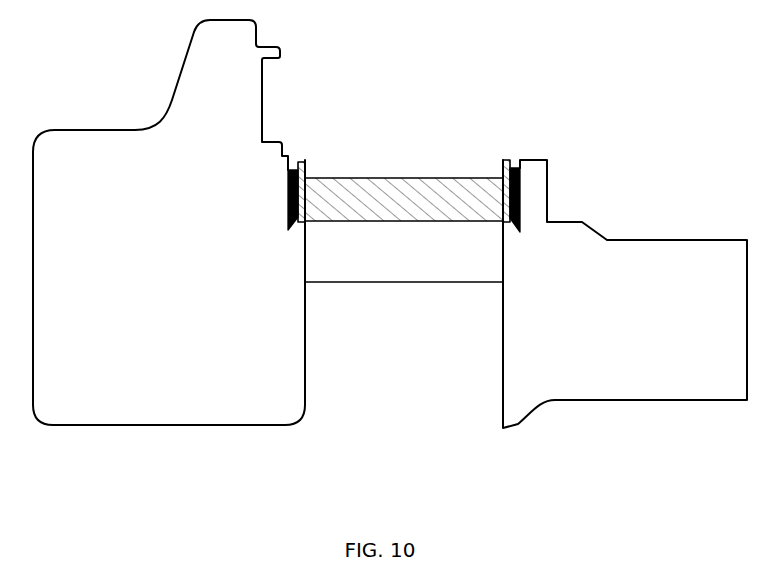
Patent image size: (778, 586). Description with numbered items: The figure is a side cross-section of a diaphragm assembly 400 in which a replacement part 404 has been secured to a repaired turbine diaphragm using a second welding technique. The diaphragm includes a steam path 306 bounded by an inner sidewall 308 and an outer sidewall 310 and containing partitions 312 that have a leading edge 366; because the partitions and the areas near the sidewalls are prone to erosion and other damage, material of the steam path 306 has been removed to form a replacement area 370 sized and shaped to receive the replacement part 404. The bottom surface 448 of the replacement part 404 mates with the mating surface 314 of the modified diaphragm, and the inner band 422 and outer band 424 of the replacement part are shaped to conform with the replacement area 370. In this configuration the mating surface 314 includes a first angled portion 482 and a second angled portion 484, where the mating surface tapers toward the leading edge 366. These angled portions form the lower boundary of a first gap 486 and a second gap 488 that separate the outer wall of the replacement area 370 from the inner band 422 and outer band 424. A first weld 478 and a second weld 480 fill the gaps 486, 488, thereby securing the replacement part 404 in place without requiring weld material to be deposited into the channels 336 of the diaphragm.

The diaphragm assembly 400 is at (622, 72).
The replacement part 404 is at (453, 127).
The steam path 306 is at (305, 455).
The inner sidewall 308 is at (548, 166).
The outer sidewall 310 is at (282, 172).
The partitions 312 is at (347, 272).
The mating surface 314 is at (403, 225).
The channels 336 is at (340, 401).
The leading edge 366 is at (475, 284).
The replacement area 370 is at (328, 251).
The inner band 422 is at (505, 160).
The outer band 424 is at (303, 161).
The bottom surface 448 is at (521, 188).
The first weld 478 is at (527, 215).
The second weld 480 is at (287, 203).
The first angled portion 482 is at (515, 239).
The second angled portion 484 is at (293, 236).
The first gap 486 is at (514, 166).
The second gap 488 is at (293, 170).